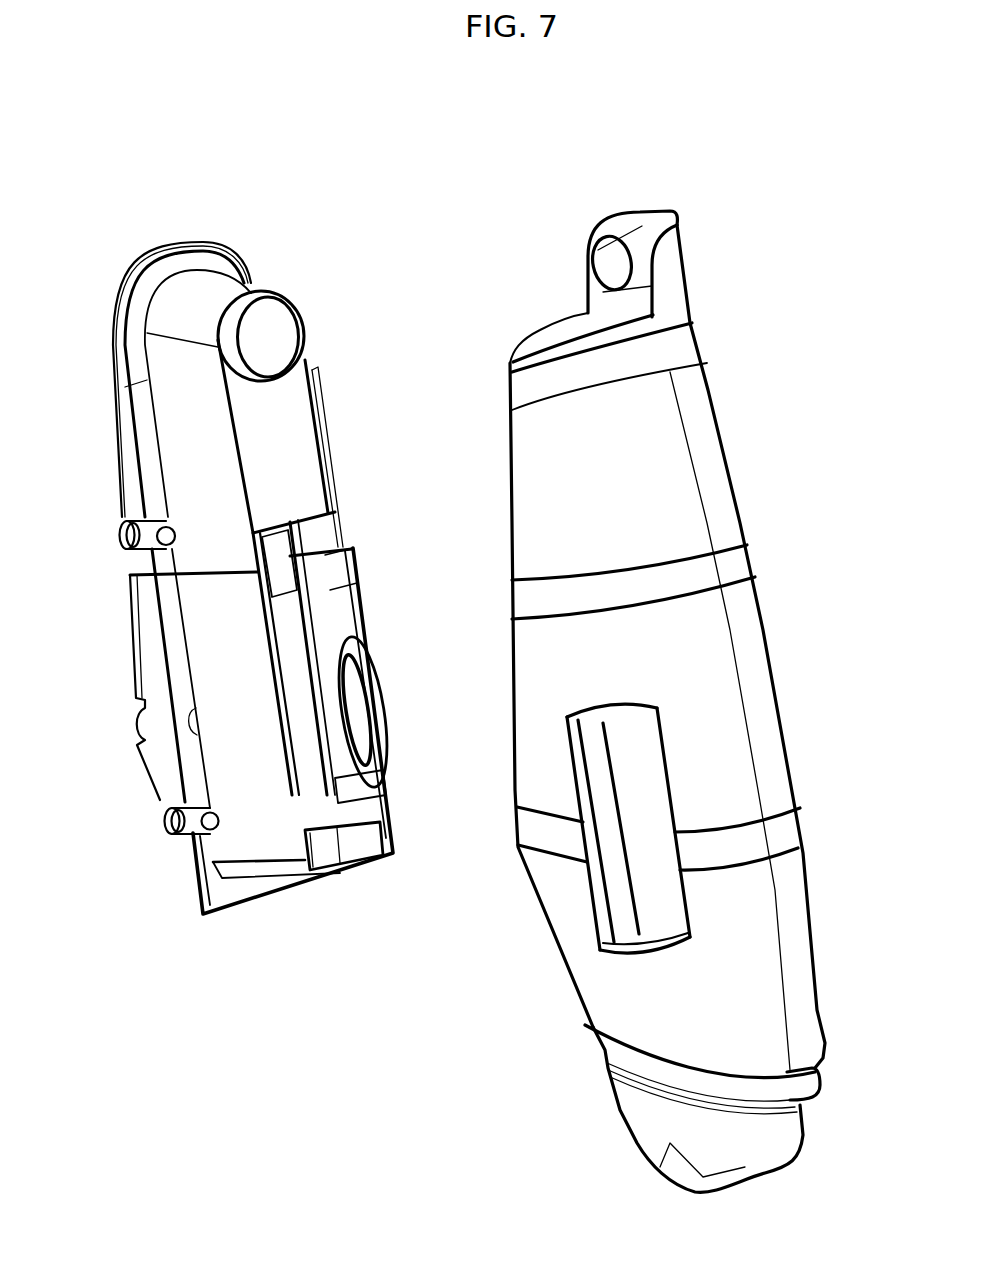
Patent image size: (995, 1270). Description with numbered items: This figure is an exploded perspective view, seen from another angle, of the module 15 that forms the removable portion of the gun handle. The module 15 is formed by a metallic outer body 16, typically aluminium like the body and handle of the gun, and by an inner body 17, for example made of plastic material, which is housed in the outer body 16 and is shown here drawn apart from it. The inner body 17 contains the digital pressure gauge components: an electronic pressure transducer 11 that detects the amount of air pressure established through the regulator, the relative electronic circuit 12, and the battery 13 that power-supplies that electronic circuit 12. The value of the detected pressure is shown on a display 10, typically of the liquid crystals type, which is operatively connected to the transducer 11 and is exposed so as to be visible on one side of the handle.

The display 10 is at (247, 834).
The transducer 11 is at (277, 321).
The electronic circuit 12 is at (318, 794).
The battery 13 is at (368, 688).
The module 15 is at (333, 944).
The outer body 16 is at (790, 726).
The inner body 17 is at (117, 464).